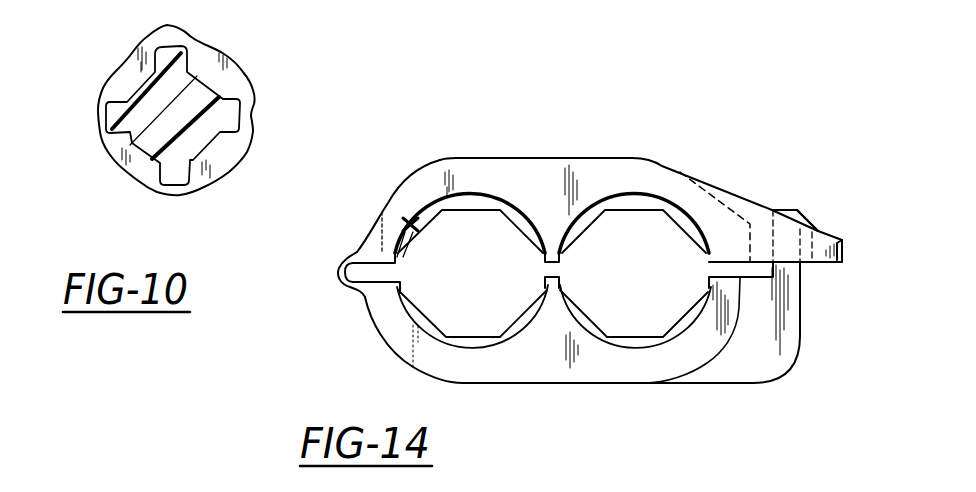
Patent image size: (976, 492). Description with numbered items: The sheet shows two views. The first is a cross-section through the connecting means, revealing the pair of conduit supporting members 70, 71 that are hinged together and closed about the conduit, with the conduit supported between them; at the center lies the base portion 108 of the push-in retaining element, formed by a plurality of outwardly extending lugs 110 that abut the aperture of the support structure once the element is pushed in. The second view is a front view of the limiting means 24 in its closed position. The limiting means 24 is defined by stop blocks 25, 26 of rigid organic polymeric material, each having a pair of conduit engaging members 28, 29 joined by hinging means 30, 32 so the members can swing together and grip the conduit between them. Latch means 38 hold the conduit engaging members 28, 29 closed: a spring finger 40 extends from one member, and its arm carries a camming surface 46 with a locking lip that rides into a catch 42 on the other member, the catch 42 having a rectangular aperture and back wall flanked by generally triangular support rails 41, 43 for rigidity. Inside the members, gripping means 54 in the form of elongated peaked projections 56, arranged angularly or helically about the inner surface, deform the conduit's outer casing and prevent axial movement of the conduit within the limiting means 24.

In FIG. 14, the limiting means 24 is at (556, 136).
In FIG. 14, the stop block 25 is at (731, 360).
In FIG. 14, the stop block 26 is at (663, 384).
In FIG. 14, the conduit engaging member 28 is at (553, 274).
In FIG. 14, the conduit engaging member 29 is at (485, 158).
In FIG. 14, the hinging means 30 is at (306, 297).
In FIG. 14, the hinge 32 is at (337, 271).
In FIG. 14, the latch means 38 is at (830, 198).
In FIG. 14, the spring finger 40 is at (790, 303).
In FIG. 14, the support rail 41 is at (697, 188).
In FIG. 14, the support rail 43 is at (718, 190).
In FIG. 14, the catch 42 is at (777, 208).
In FIG. 14, the camming surface 46 is at (805, 218).
In FIG. 14, the gripping means 54 is at (407, 221).
In FIG. 14, the peaked projection 56 is at (428, 215).
In FIG. 10, the conduit supporting member 70 is at (137, 110).
In FIG. 10, the conduit supporting member 71 is at (118, 78).
In FIG. 10, the base portion 108 is at (205, 90).
In FIG. 10, the lug 110 is at (172, 50).